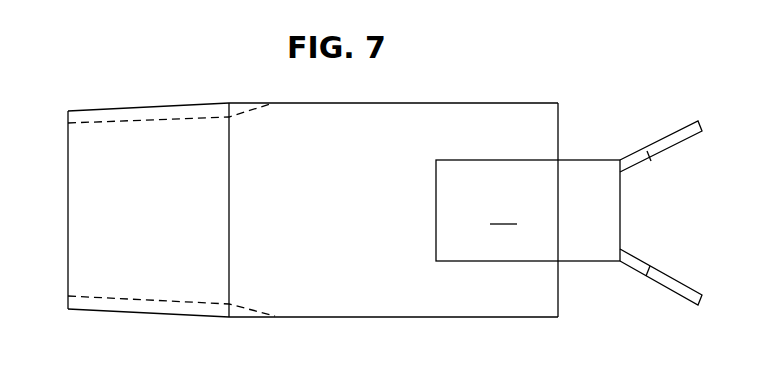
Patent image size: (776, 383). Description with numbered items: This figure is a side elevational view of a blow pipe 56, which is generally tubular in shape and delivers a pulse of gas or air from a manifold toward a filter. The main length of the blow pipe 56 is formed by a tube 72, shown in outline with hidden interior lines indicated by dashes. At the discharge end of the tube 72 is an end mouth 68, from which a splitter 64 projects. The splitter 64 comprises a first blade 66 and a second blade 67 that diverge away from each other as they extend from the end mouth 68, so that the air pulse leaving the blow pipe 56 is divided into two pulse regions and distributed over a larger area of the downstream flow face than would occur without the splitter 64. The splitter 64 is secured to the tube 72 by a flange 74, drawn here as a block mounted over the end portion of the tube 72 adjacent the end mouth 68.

The blow pipe 56 is at (346, 202).
The splitter 64 is at (696, 183).
The first blade 66 is at (667, 134).
The second blade 67 is at (666, 272).
The end mouth 68 is at (559, 277).
The tube 72 is at (363, 309).
The flange 74 is at (528, 210).